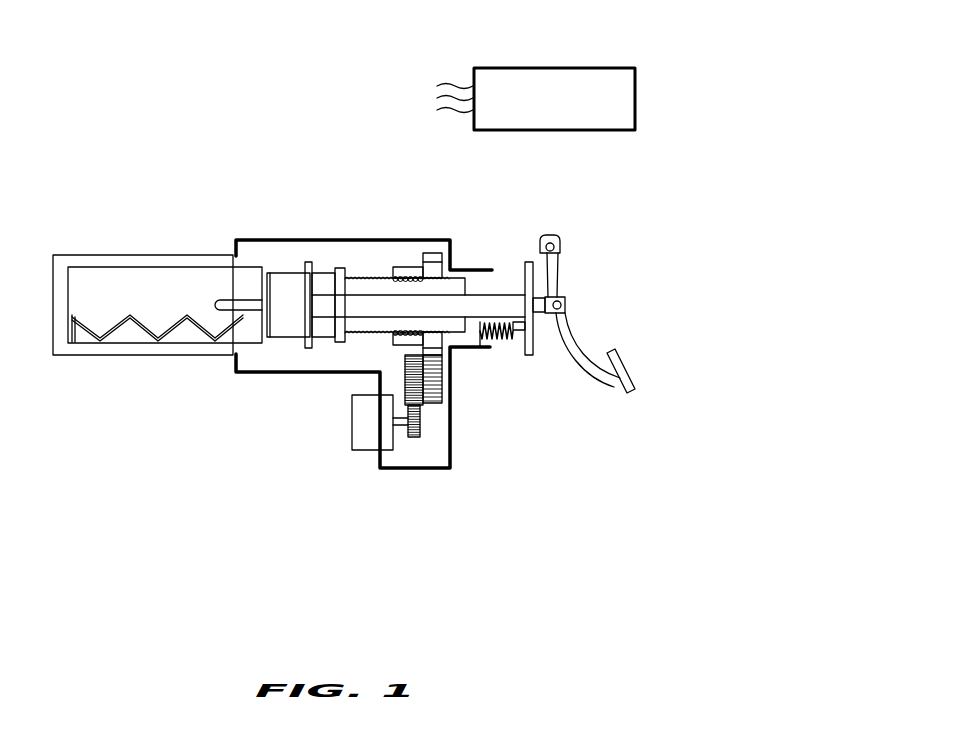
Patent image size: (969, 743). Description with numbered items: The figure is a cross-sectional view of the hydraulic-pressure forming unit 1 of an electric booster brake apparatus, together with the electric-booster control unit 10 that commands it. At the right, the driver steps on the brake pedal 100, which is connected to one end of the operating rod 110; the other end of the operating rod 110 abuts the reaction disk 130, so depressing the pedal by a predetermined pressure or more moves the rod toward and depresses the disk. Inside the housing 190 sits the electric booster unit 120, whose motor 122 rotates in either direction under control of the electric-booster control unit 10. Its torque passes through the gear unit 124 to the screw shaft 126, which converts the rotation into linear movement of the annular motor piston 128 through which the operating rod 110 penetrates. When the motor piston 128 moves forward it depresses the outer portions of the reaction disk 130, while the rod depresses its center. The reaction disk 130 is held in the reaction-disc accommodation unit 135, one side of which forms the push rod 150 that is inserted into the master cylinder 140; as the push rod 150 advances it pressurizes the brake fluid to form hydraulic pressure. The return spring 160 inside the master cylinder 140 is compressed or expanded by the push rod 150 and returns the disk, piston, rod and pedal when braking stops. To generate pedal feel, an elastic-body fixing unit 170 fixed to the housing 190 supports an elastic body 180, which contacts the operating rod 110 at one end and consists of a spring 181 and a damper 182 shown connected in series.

The hydraulic-pressure forming unit 1 is at (386, 98).
The electric-booster control unit 10 is at (571, 68).
The brake pedal 100 is at (623, 375).
The operating rod 110 is at (495, 297).
The electric booster unit 120 is at (475, 548).
The motor 122 is at (367, 437).
The gear unit 124 is at (550, 507).
The screw shaft 126 is at (327, 510).
The motor piston 128 is at (325, 327).
The reaction disk 130 is at (288, 287).
The reaction-disc accommodation unit 135 is at (268, 272).
The master cylinder 140 is at (112, 257).
The push rod 150 is at (222, 300).
The return spring 160 is at (113, 340).
The elastic-body fixing unit 170 is at (480, 340).
The elastic body 180 is at (613, 431).
The spring 181 is at (513, 330).
The damper 182 is at (527, 325).
The housing 190 is at (442, 240).